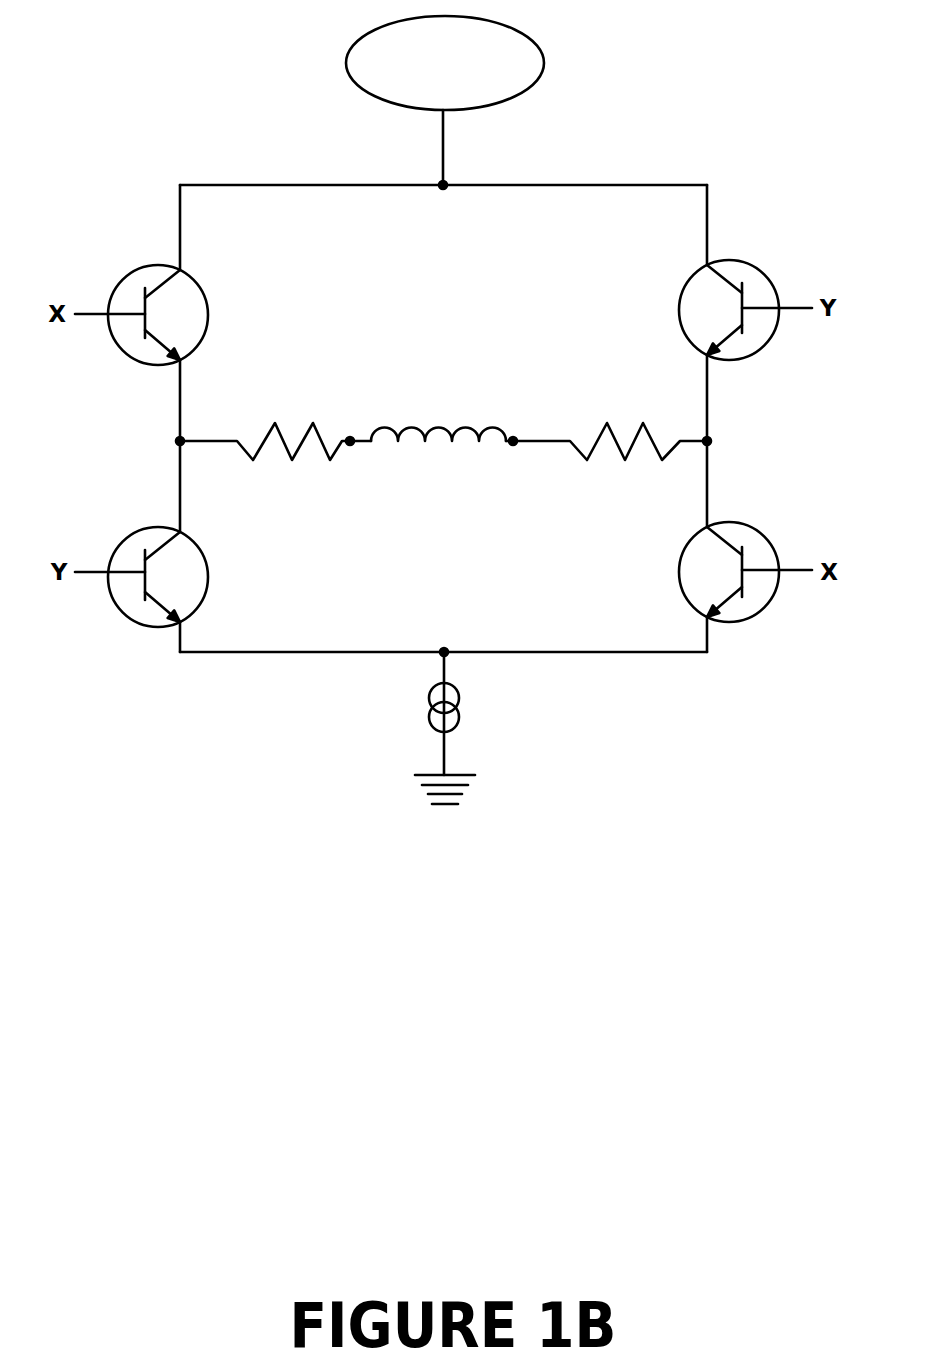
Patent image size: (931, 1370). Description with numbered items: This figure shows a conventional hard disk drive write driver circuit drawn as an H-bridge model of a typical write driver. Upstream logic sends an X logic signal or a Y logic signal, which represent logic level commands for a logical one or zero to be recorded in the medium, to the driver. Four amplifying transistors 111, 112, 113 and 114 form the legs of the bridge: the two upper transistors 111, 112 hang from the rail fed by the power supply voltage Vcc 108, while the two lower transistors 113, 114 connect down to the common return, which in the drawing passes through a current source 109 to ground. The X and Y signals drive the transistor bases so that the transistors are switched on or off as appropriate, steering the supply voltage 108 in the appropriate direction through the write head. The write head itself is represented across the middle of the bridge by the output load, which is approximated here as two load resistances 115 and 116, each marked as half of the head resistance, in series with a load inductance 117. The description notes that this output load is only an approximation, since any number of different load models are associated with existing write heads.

The power supply voltage Vcc 108 is at (463, 101).
The write current source IW 109 is at (421, 728).
The amplifying transistor 111 is at (196, 320).
The amplifying transistor 112 is at (685, 315).
The amplifying transistor 113 is at (155, 577).
The amplifying transistor 114 is at (687, 577).
The load resistance 115 is at (265, 428).
The load resistance 116 is at (610, 428).
The load inductance 117 is at (438, 424).